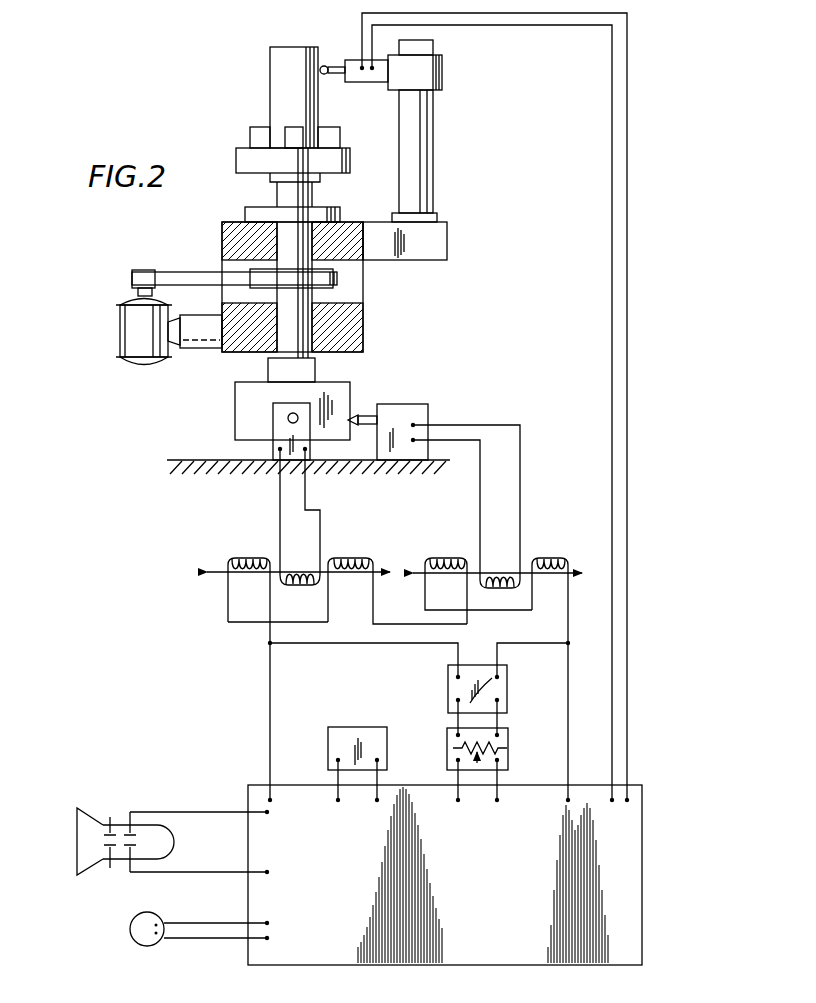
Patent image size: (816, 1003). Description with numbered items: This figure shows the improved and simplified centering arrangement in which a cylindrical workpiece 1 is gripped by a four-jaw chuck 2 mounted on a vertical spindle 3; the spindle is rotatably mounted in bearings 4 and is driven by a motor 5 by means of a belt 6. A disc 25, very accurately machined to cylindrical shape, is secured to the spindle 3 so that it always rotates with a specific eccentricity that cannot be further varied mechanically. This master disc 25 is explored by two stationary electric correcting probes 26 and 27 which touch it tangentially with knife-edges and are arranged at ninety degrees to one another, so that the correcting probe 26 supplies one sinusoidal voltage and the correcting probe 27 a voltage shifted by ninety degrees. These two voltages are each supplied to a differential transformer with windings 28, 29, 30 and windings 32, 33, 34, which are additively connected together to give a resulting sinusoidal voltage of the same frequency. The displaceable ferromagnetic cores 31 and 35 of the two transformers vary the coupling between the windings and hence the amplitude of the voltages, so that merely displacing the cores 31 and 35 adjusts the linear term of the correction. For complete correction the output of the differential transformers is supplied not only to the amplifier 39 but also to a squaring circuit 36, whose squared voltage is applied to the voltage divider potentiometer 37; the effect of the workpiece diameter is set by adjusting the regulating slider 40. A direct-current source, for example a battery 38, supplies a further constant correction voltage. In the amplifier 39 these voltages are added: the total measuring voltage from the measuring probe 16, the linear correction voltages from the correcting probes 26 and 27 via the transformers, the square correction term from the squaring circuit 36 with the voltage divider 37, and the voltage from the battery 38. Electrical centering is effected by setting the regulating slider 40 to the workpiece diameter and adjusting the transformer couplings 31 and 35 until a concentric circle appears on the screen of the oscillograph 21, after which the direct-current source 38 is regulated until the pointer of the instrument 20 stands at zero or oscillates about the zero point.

The cylindrical workpiece 1 is at (283, 68).
The four-jaw chuck 2 is at (243, 152).
The vertical spindle 3 is at (283, 193).
The bearings 4 is at (348, 312).
The motor 5 is at (125, 330).
The belt 6 is at (186, 283).
The measuring probe 16 is at (354, 78).
The instrument 20 is at (130, 937).
The oscillograph 21 is at (85, 842).
The disc 25 is at (242, 387).
The electric correcting probe 26 is at (400, 408).
The electric correcting probe 27 is at (288, 430).
The winding 28 is at (507, 578).
The winding 29 is at (560, 562).
The winding 30 is at (455, 562).
The displaceable ferromagnetic core 31 is at (510, 585).
The winding 32 is at (302, 578).
The winding 33 is at (354, 562).
The winding 34 is at (255, 562).
The displaceable ferromagnetic core 35 is at (283, 582).
The squaring circuit 36 is at (457, 688).
The voltage divider potentiometer 37 is at (458, 762).
The battery 38 is at (356, 728).
The amplifier 39 is at (346, 953).
The regulating slider 40 is at (478, 763).